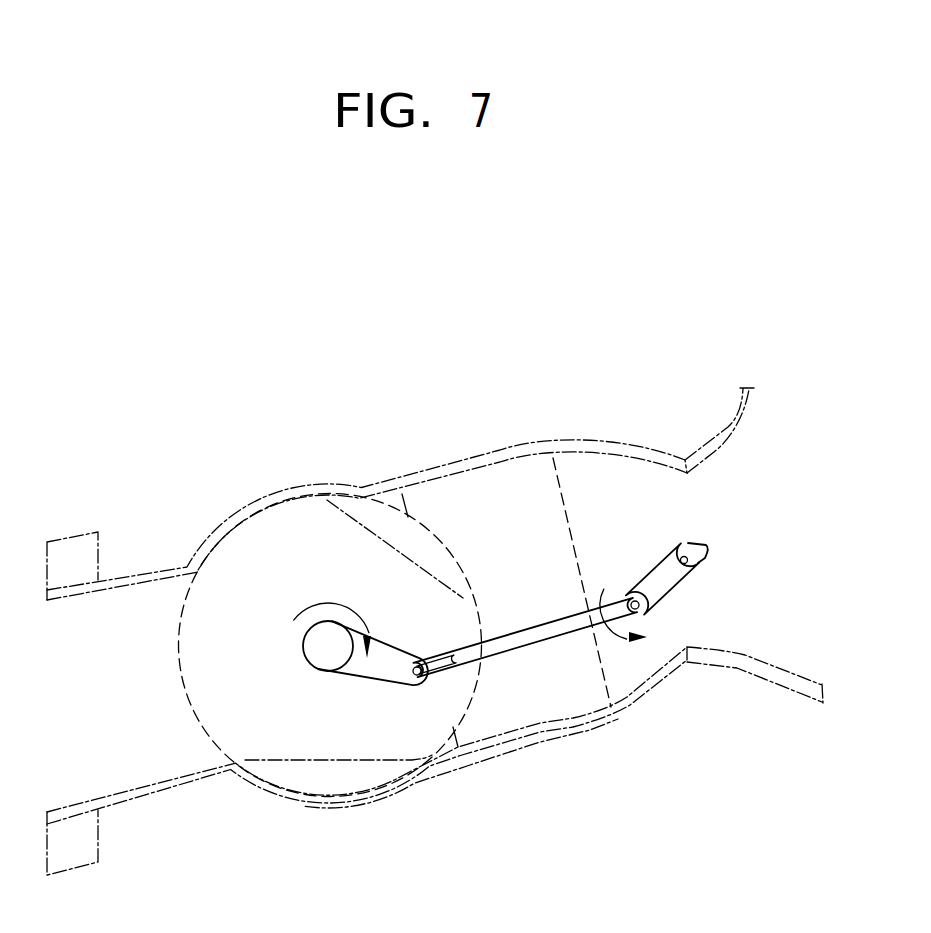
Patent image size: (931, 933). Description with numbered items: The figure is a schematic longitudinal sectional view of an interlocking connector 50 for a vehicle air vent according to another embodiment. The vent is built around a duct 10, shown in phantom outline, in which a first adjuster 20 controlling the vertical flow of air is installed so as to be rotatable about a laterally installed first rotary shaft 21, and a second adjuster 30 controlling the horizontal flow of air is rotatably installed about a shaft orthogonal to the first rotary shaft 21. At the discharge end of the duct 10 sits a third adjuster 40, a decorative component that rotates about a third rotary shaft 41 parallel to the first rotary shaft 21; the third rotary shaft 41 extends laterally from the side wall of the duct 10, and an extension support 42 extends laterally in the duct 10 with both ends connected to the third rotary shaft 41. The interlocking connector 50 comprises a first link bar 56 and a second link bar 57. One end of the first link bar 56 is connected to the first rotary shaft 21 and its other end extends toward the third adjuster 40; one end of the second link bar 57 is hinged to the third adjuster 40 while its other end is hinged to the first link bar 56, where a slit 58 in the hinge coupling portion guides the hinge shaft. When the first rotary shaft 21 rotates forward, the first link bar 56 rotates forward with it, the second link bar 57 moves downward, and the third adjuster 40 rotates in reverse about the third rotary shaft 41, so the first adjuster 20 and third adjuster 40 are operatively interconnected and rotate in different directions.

The duct 10 is at (447, 445).
The first adjuster 20 is at (284, 792).
The first rotary shaft 21 is at (351, 668).
The second adjuster 30 is at (572, 490).
The third adjuster 40 is at (679, 556).
The third rotary shaft 41 is at (686, 563).
The extension support 42 is at (663, 586).
The interlocking connector 50 is at (477, 765).
The first link bar 56 is at (383, 678).
The second link bar 57 is at (539, 645).
The slit 58 is at (434, 682).